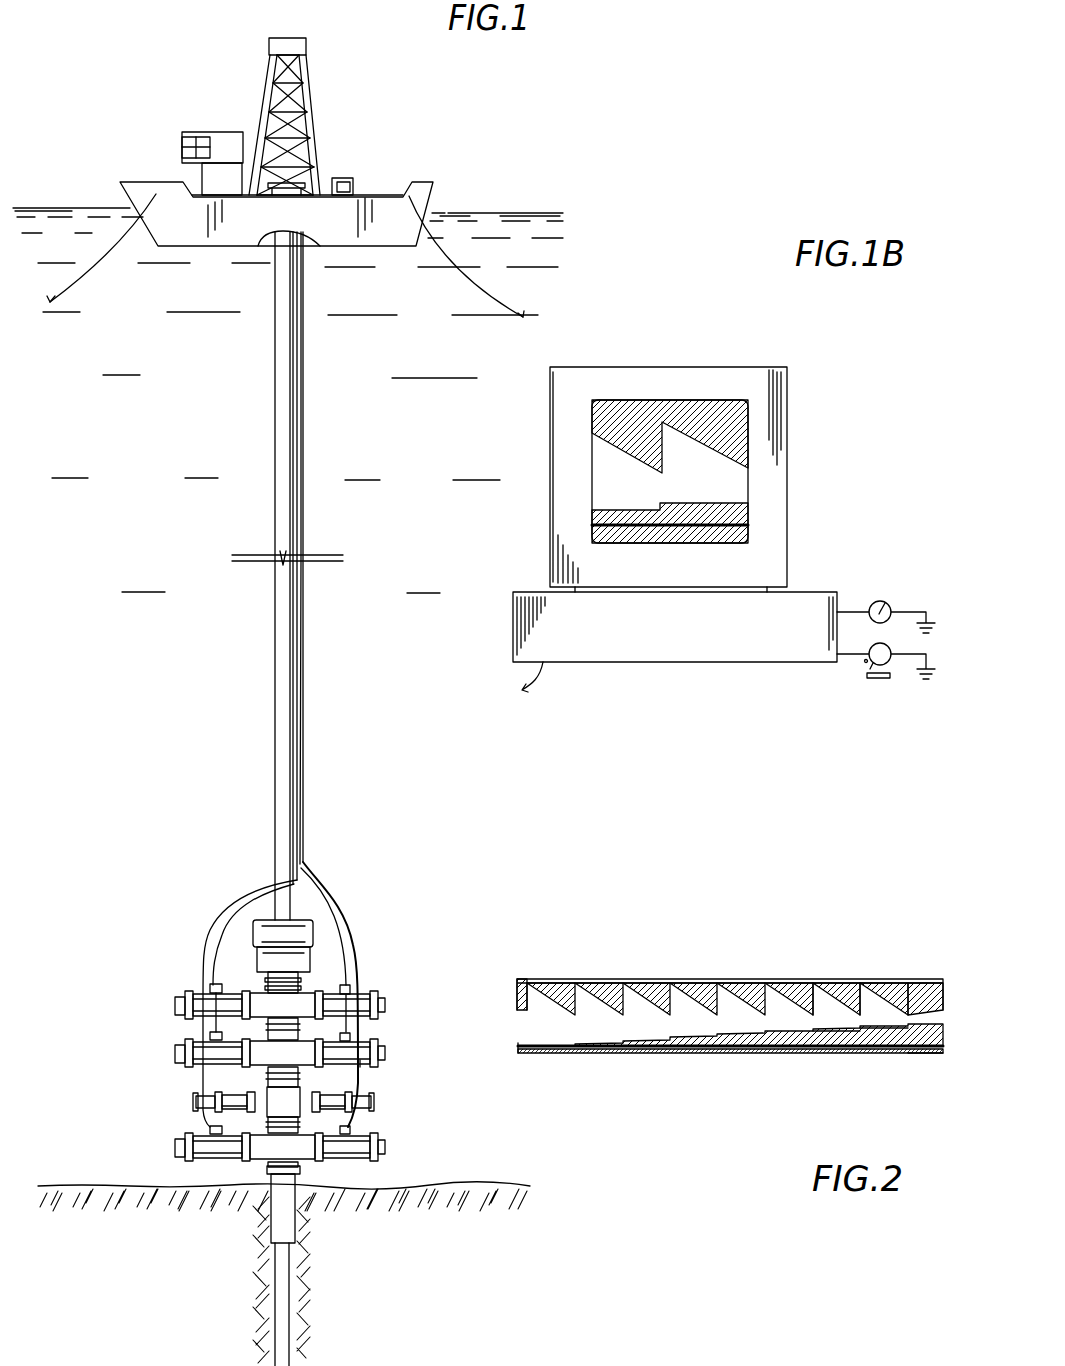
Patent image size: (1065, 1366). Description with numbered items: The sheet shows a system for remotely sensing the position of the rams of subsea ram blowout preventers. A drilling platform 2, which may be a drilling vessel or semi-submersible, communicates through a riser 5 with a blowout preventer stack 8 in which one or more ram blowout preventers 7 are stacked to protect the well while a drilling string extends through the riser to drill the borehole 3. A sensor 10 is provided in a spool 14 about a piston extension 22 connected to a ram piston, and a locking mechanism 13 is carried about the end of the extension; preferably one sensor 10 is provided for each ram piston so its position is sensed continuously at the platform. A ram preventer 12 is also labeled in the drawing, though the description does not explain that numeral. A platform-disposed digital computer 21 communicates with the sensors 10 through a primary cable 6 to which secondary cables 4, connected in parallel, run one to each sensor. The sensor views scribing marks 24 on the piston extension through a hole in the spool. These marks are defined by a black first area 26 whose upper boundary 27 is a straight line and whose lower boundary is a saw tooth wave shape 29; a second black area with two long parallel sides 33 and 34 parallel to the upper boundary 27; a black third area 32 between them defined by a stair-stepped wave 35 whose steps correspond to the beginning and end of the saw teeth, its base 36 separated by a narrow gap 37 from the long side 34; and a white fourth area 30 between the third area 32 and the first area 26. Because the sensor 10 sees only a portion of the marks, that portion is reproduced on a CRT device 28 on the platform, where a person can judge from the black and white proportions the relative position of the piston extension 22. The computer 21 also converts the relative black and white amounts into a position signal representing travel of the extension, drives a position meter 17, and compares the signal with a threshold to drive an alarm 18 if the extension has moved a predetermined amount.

In FIG. 1, the drilling platform 2 is at (238, 100).
In FIG. 1, the digital computer 21 is at (347, 178).
In FIG. 1B, the digital computer 21 is at (715, 645).
In FIG. 1, the riser 5 is at (276, 408).
In FIG. 1, the primary cable 6 is at (300, 661).
In FIG. 1B, the primary cable 6 is at (538, 694).
In FIG. 1, the secondary cables 4 is at (352, 937).
In FIG. 1, the ram blowout preventer 7 is at (238, 972).
In FIG. 1, the blowout preventer stack 8 is at (85, 962).
In FIG. 1, the borehole 3 is at (277, 1310).
In FIG. 1, the sensor 10 is at (350, 986).
In FIG. 1, the ram preventer 12 is at (380, 997).
In FIG. 1, the locking mechanism 13 is at (383, 1050).
In FIG. 1, the spool 14 is at (363, 1067).
In FIG. 1B, the first area 26 is at (712, 400).
In FIG. 2, the first area 26 is at (527, 993).
In FIG. 1B, the CRT device 28 is at (786, 440).
In FIG. 2, the CRT device 28 is at (588, 1050).
In FIG. 1B, the piston extension 22 is at (808, 596).
In FIG. 1B, the position meter 17 is at (884, 601).
In FIG. 1B, the alarm 18 is at (890, 672).
In FIG. 2, the scribing marks 24 is at (752, 975).
In FIG. 2, the upper boundary 27 is at (640, 979).
In FIG. 2, the saw tooth wave shape 29 is at (860, 1010).
In FIG. 2, the stair-stepped wave 35 is at (822, 1030).
In FIG. 2, the fourth area 30 is at (723, 1014).
In FIG. 2, the long side 34 is at (527, 1041).
In FIG. 2, the long side 33 is at (528, 1053).
In FIG. 2, the narrow gap 37 is at (825, 1048).
In FIG. 2, the third area 32 is at (883, 1048).
In FIG. 2, the base 36 is at (922, 1055).